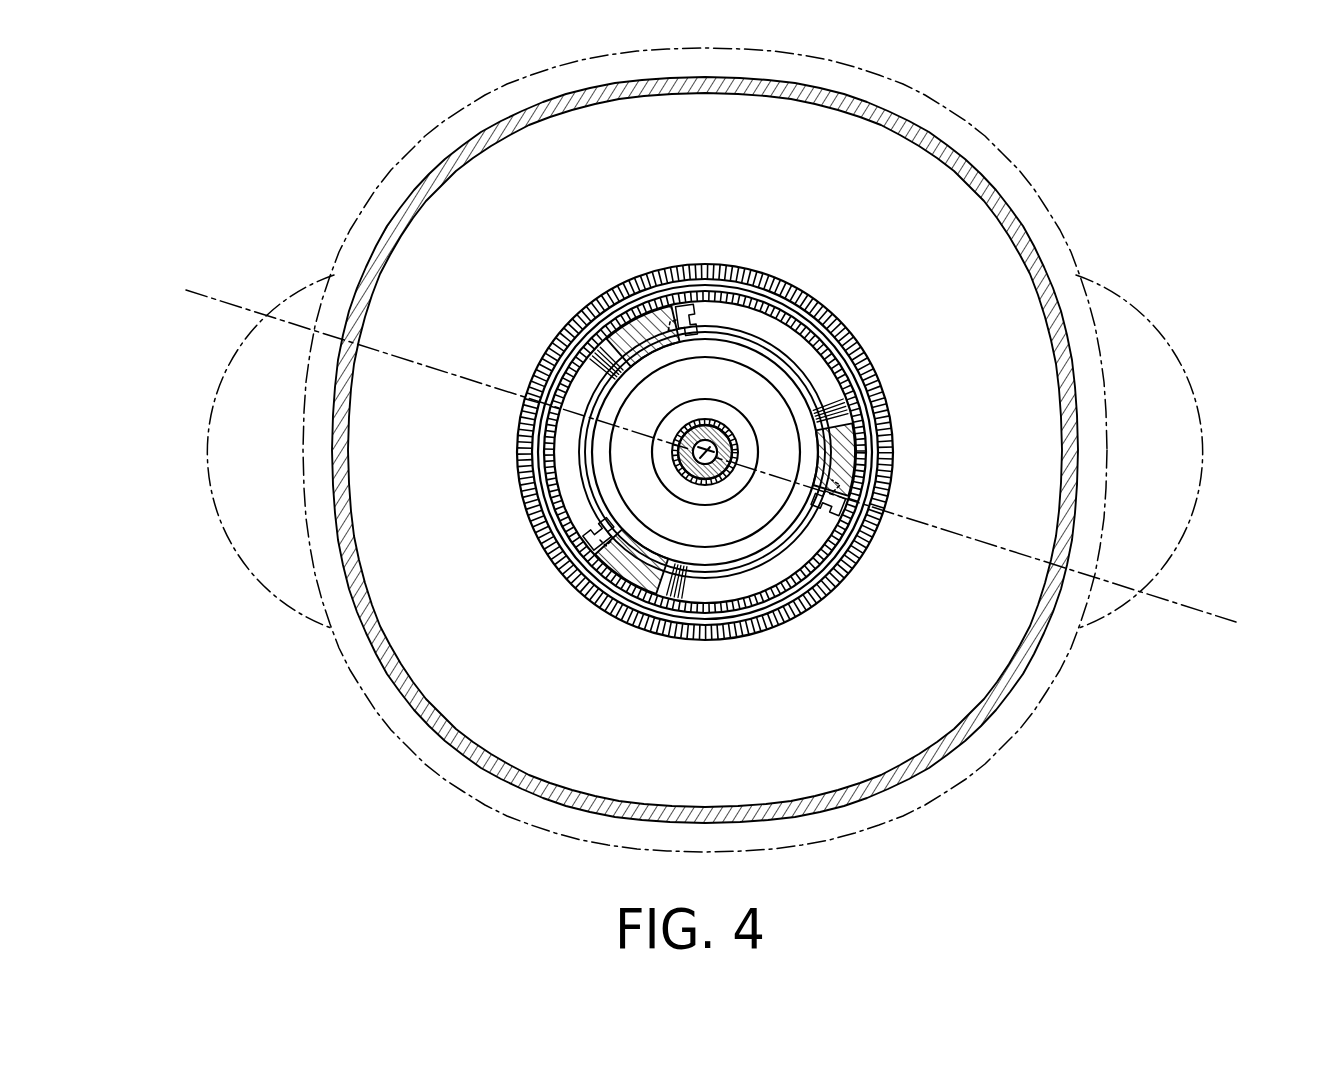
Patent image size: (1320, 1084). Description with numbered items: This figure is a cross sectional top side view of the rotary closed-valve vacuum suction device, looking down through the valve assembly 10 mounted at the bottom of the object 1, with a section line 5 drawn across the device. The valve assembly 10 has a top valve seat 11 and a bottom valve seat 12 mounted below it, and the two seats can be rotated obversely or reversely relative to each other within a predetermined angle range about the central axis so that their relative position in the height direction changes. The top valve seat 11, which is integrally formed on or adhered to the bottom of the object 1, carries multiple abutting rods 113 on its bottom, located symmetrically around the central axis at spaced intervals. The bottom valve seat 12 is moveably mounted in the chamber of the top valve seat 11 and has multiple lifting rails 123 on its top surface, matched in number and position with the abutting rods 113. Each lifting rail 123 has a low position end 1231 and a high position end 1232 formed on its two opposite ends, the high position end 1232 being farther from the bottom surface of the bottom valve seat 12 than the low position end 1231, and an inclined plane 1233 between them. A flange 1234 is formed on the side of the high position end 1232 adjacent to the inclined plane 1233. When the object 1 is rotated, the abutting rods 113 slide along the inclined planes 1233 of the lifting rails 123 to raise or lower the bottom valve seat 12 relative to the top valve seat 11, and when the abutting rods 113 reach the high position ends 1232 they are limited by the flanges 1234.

The object 1 is at (1015, 138).
The valve assembly 10 is at (903, 468).
The top valve seat 11 is at (557, 332).
The bottom valve seat 12 is at (608, 313).
The abutting rods 113 is at (684, 304).
The lifting rails 123 is at (768, 330).
The low position end 1231 is at (708, 302).
The high position end 1232 is at (840, 420).
The inclined plane 1233 is at (790, 343).
The flange 1234 is at (840, 405).
The section line 5- 5 is at (196, 296).